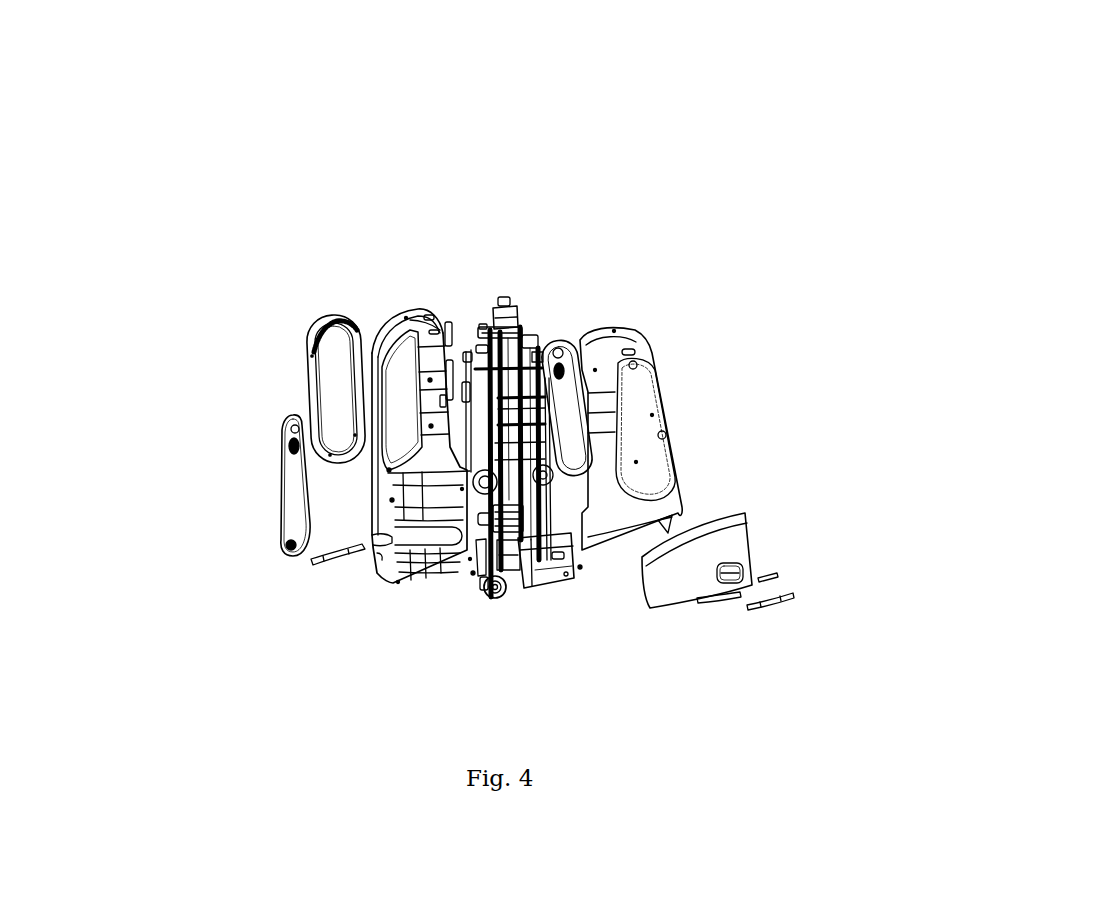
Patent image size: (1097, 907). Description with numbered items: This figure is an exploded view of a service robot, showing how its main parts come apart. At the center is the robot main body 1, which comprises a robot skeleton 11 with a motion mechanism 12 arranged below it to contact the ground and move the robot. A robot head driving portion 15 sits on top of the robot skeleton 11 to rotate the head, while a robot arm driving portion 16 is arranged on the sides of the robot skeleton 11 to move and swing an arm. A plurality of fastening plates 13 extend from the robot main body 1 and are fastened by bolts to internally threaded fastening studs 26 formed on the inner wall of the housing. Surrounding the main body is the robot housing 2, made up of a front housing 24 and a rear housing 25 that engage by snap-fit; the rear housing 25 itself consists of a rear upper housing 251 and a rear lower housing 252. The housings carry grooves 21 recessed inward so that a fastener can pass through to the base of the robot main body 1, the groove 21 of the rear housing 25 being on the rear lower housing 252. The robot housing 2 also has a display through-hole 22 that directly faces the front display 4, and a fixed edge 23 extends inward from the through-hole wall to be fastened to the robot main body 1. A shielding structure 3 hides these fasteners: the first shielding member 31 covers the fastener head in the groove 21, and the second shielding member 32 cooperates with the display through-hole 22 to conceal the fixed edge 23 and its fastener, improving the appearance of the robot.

The robot main body 1 is at (380, 673).
The robot skeleton 11 is at (486, 524).
The motion mechanism 12 is at (500, 596).
The fastening plate 13 is at (553, 343).
The robot head driving portion 15 is at (518, 314).
The robot arm driving portion 16 is at (481, 322).
The robot housing 2 is at (792, 110).
The groove 21 is at (750, 569).
The display through-hole 22 is at (422, 384).
The fixed edge 23 is at (319, 323).
The front housing 24 is at (400, 322).
The rear housing 25 is at (787, 206).
The rear upper housing 251 is at (621, 333).
The rear lower housing 252 is at (717, 547).
The fastening stud 26 is at (448, 348).
The shielding structure 3 is at (124, 342).
The first shielding member 31 is at (326, 552).
The second shielding member 32 is at (309, 349).
The front display 4 is at (361, 399).